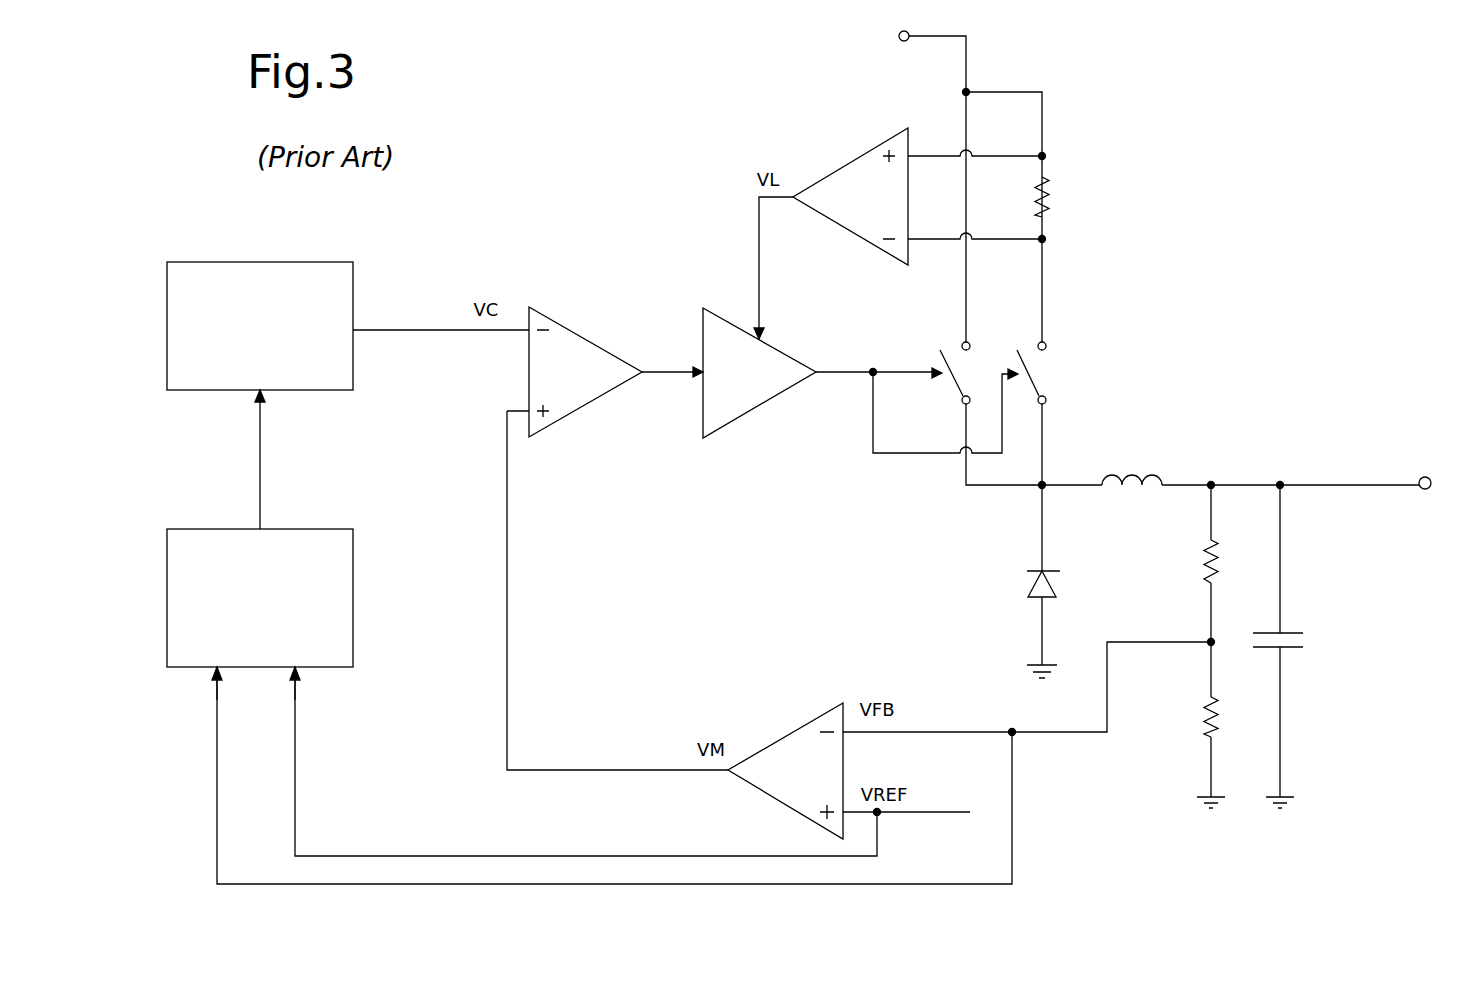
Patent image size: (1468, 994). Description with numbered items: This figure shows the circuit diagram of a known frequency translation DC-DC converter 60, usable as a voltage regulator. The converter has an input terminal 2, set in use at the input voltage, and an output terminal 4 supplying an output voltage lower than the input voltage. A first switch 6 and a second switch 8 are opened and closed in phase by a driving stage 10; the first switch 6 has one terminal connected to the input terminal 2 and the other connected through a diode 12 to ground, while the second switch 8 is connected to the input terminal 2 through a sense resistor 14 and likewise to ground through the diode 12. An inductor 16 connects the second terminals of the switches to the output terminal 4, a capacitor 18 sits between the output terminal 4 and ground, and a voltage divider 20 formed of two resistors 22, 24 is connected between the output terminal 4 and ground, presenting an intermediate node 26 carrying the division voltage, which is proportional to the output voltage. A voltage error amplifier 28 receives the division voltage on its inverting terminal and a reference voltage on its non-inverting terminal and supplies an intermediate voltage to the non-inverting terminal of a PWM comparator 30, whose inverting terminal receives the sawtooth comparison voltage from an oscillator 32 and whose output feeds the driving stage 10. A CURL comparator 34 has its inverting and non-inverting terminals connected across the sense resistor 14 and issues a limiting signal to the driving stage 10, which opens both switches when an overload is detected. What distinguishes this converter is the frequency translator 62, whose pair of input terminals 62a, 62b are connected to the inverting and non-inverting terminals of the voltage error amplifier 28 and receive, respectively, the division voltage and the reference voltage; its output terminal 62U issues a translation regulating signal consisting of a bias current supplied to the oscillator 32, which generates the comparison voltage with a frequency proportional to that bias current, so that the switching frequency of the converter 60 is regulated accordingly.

The input terminal 2 is at (905, 45).
The output terminal 4 is at (1424, 490).
The first switch 6 is at (962, 385).
The second switch 8 is at (1040, 385).
The driving stage 10 is at (731, 418).
The diode 12 is at (1033, 585).
The sense resistor 14 is at (1052, 207).
The inductor 16 is at (1118, 472).
The capacitor 18 is at (1292, 633).
The voltage divider 20 is at (1228, 612).
The resistor 22 is at (1200, 560).
The resistor 24 is at (1200, 730).
The intermediate node 26 is at (1207, 650).
The voltage error amplifier 28 is at (782, 758).
The PWM comparator 30 is at (570, 340).
The oscillator 32 is at (323, 263).
The CURL comparator 34 is at (824, 186).
The frequency translation DC-DC converter 60 is at (1352, 198).
The frequency translator 62 is at (352, 624).
The output terminal 62U is at (265, 528).
The input terminal 62a is at (213, 672).
The input terminal 62b is at (292, 672).